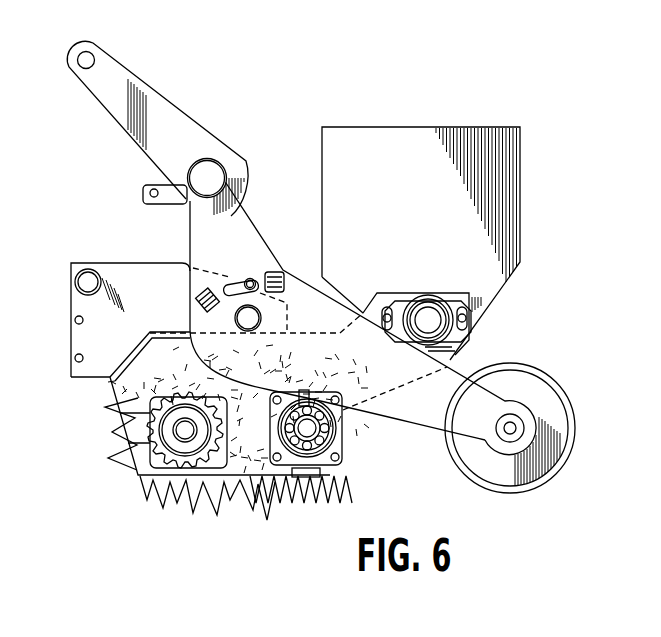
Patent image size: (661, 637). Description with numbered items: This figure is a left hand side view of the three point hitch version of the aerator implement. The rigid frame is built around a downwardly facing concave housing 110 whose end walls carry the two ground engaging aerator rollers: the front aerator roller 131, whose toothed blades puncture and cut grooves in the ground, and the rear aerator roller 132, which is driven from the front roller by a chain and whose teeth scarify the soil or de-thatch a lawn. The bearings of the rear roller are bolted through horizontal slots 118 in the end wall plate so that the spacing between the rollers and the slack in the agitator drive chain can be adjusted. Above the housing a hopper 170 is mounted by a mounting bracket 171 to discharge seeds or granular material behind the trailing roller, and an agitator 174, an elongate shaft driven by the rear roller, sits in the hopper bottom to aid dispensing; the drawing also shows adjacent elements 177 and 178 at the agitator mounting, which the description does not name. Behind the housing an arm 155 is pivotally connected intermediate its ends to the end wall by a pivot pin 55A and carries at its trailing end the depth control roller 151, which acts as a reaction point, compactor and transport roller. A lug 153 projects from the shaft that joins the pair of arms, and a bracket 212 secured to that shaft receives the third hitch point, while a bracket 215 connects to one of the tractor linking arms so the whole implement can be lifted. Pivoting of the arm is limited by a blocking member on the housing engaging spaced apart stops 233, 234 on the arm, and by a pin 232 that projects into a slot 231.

The housing 110 is at (110, 352).
The slots 118 is at (147, 447).
The aerator roller 131 is at (176, 505).
The aerator roller 132 is at (268, 505).
The depth control unit 151 is at (565, 402).
The lug 153 is at (148, 184).
The arm 155 is at (243, 180).
The pivot pin 55A is at (235, 318).
The hopper 170 is at (322, 146).
The mounting brackets 171 is at (372, 312).
The agitator 174 is at (428, 320).
The ball fastener 177 is at (463, 320).
The bearing housing 178 is at (475, 297).
The bracket 212 is at (148, 117).
The bracket 215 is at (90, 279).
The slot 231 is at (235, 283).
The pin 232 is at (243, 282).
The stop 233 is at (193, 289).
The stop 234 is at (273, 273).